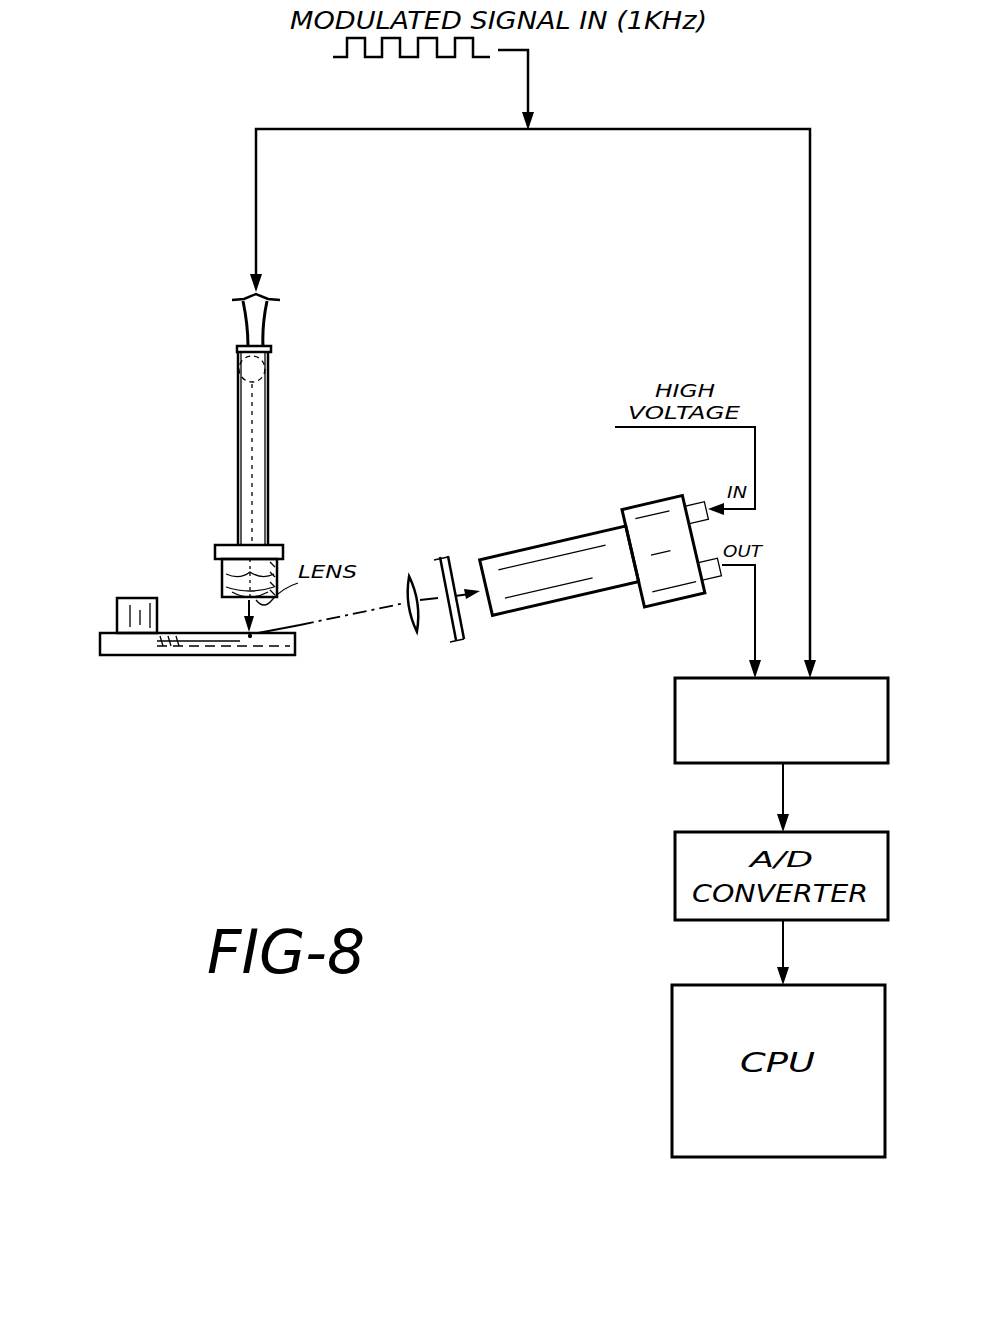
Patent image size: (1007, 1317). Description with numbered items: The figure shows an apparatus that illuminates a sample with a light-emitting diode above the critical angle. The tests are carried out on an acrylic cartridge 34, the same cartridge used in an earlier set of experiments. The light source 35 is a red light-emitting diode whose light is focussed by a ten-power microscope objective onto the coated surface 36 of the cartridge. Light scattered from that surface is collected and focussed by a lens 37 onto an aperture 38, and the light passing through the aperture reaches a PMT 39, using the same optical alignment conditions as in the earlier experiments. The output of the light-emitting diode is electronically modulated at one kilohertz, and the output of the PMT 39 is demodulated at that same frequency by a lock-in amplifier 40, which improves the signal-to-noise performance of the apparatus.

The acrylic cartridge 34 is at (112, 656).
The light source 35 is at (270, 386).
The coated surface 36 is at (250, 655).
The lens 37 is at (411, 635).
The aperture 38 is at (453, 600).
The PMT 39 is at (565, 540).
The lock-in amplifier 40 is at (675, 732).